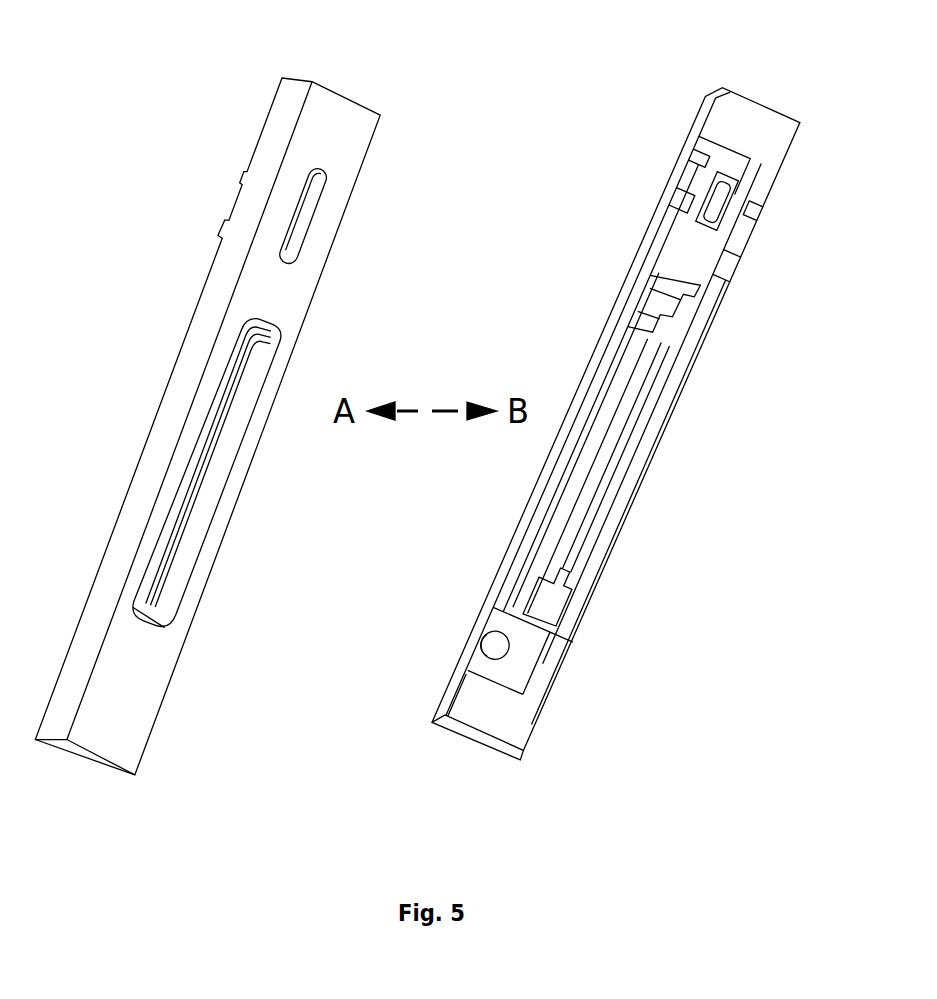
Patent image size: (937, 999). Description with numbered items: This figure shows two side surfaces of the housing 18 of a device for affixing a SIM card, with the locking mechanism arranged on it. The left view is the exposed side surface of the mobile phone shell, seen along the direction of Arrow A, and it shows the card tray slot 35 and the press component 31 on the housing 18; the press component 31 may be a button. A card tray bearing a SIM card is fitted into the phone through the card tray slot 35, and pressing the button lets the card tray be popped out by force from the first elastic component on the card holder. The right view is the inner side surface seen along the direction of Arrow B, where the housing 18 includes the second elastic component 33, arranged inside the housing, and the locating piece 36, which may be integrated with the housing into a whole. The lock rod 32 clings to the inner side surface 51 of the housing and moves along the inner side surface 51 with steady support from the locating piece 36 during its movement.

The housing 18 is at (105, 738).
The press component 31 is at (312, 200).
The card tray slot 35 is at (240, 394).
The locating piece 36 is at (752, 210).
The lock rod 32 is at (555, 617).
The second elastic component 33 is at (490, 650).
The inner side surface 51 is at (493, 702).